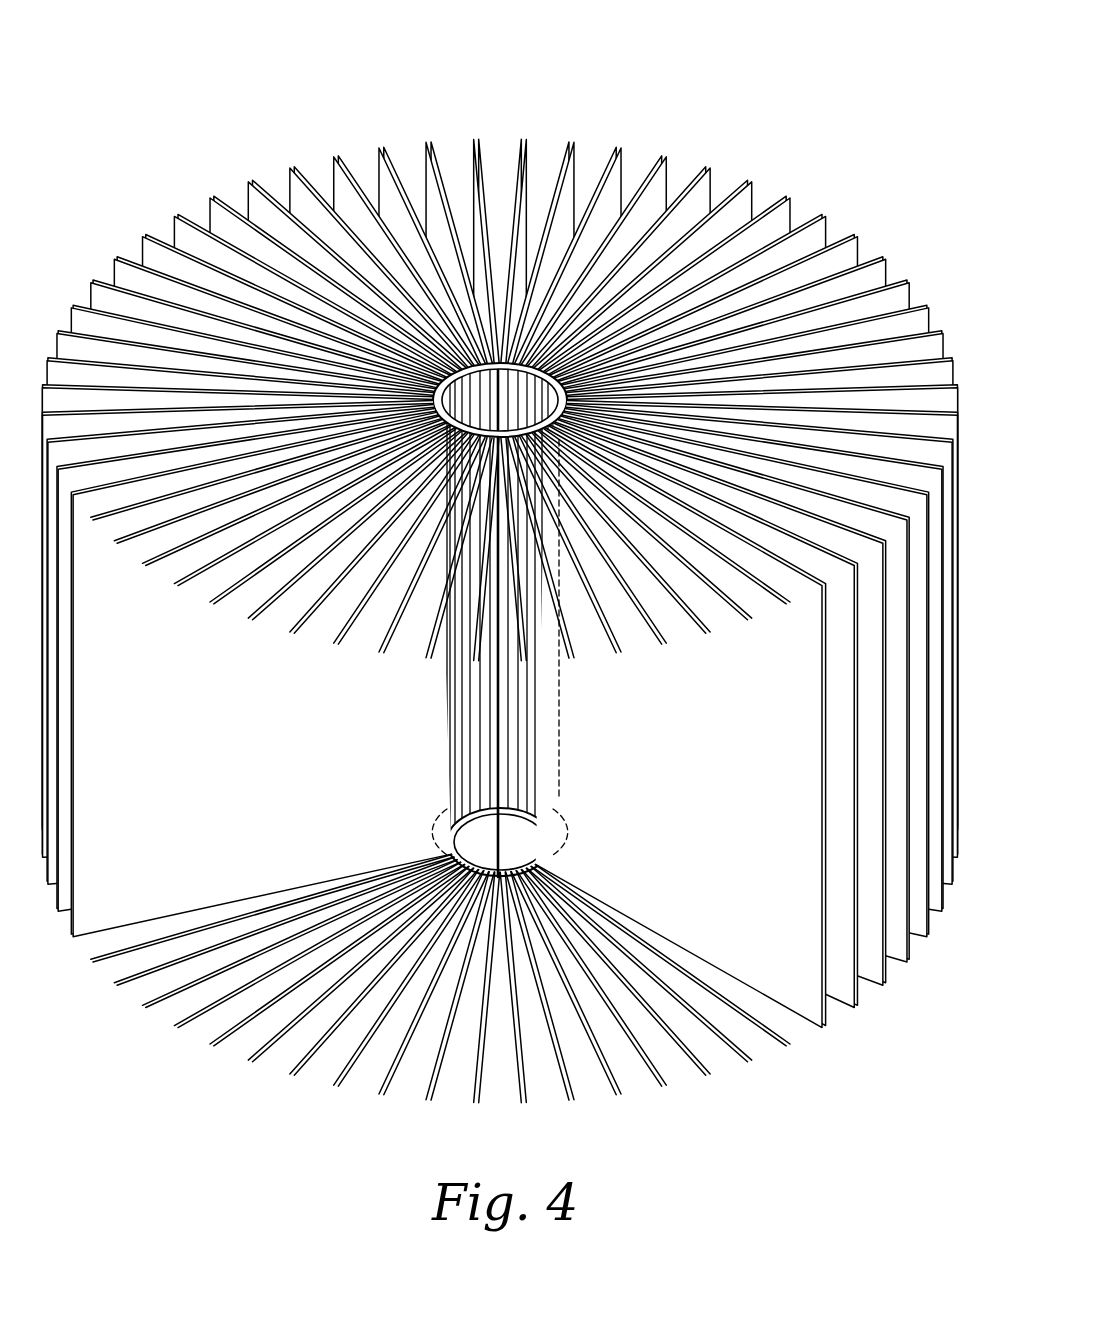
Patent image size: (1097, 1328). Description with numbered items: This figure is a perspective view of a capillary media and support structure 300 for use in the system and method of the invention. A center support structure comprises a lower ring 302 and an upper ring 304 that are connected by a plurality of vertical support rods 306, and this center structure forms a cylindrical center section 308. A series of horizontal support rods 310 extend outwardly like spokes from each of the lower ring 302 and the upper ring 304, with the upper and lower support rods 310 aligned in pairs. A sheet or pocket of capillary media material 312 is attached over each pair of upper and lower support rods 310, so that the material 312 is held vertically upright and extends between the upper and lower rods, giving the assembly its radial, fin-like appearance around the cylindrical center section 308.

The capillary media and support structure 300 is at (499, 601).
The lower ring 302 is at (447, 474).
The upper ring 304 is at (500, 372).
The vertical support rods 306 is at (503, 834).
The cylindrical center section 308 is at (500, 372).
The horizontal support rods 310 is at (499, 629).
The capillary media material 312 is at (800, 993).